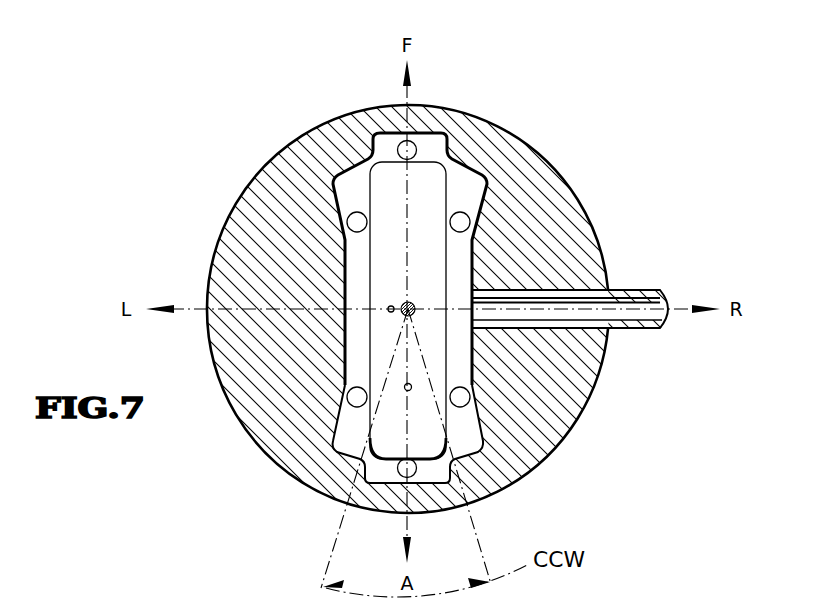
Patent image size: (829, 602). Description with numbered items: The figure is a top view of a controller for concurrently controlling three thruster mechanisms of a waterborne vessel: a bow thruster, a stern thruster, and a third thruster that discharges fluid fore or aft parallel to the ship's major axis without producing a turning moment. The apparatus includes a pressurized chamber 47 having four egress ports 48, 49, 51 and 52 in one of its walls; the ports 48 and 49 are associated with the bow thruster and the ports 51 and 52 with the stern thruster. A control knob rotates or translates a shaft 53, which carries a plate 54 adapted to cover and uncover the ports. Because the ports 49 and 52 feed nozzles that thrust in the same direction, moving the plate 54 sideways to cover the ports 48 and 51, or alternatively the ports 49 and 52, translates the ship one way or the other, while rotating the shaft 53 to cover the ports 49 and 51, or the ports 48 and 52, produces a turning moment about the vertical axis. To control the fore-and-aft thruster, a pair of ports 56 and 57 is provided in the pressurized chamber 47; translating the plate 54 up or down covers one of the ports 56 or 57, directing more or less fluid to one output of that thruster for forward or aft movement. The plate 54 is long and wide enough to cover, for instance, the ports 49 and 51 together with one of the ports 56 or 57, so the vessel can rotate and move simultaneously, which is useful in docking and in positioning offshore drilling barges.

The pressurized chamber 47 is at (459, 282).
The egress port 48 is at (465, 403).
The egress port 49 is at (351, 404).
The egress port 51 is at (465, 214).
The egress port 52 is at (351, 216).
The shaft 53 is at (408, 302).
The plate 54 is at (408, 383).
The port 56 is at (413, 144).
The port 57 is at (402, 477).